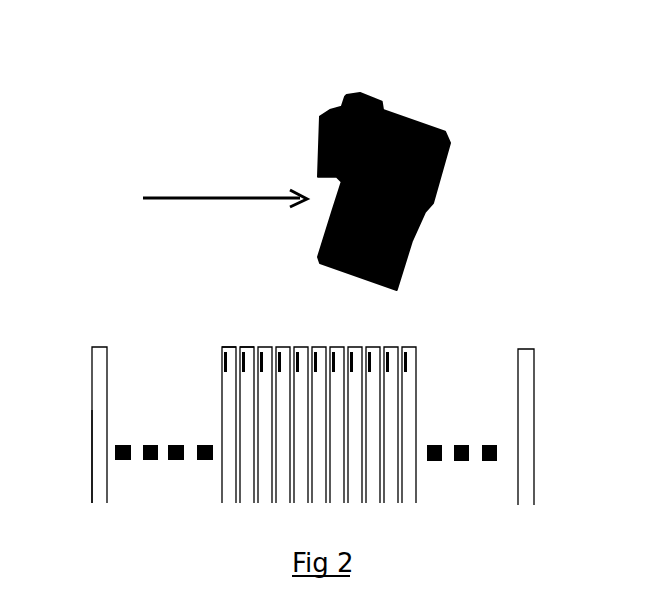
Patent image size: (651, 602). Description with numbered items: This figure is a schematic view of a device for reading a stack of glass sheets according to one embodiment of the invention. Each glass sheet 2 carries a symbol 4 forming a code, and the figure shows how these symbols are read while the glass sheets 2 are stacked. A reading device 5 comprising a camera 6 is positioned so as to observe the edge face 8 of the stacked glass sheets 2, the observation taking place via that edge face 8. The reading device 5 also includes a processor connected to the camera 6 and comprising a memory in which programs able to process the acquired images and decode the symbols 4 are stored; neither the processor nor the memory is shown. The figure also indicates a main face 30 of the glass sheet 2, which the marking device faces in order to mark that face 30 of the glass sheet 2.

The glass sheet 2 is at (248, 347).
The symbol 4 is at (97, 367).
The reading device 5 is at (236, 127).
The camera 6 is at (463, 137).
The edge face 8 is at (102, 347).
The main face 30 is at (92, 410).